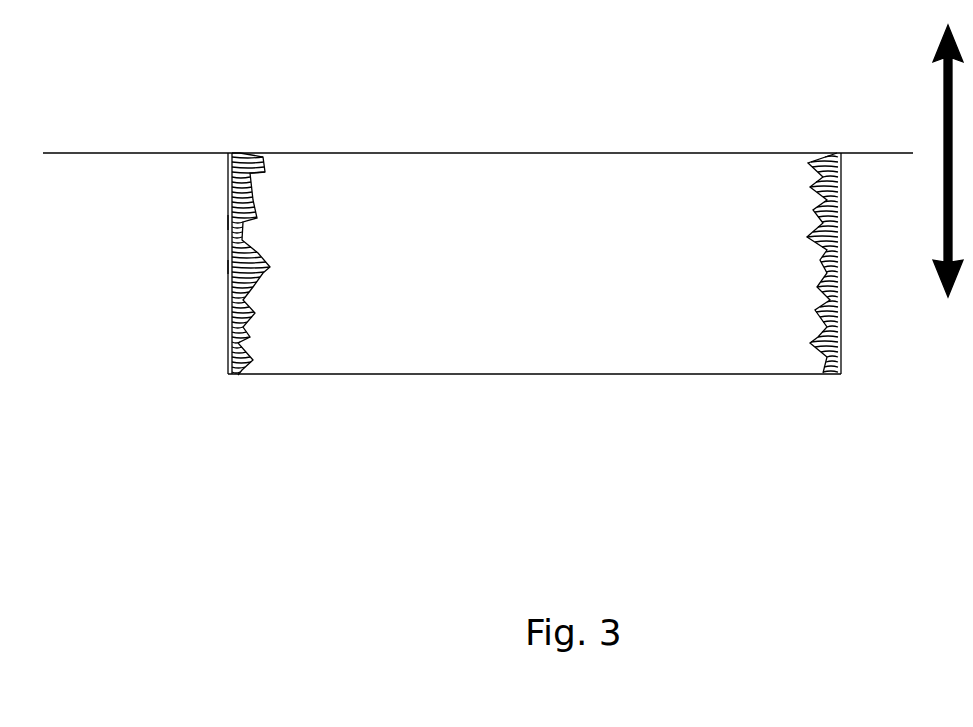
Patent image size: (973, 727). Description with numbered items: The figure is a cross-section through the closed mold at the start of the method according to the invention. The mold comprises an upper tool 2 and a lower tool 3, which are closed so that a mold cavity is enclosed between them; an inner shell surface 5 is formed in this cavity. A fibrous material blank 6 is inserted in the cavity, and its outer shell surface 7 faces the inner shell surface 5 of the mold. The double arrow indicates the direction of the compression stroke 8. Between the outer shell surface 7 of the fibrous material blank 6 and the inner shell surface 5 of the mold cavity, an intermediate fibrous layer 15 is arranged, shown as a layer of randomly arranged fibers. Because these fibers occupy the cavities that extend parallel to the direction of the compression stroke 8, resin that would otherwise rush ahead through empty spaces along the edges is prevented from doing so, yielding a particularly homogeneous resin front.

The upper tool 2 is at (553, 125).
The lower tool 3 is at (553, 440).
The inner shell surface 5 is at (228, 172).
The fibrous material blank 6 is at (307, 218).
The outer shell surface 7 is at (228, 265).
The direction of the compression stroke 8 is at (944, 105).
The intermediate fibrous layer 15 is at (228, 222).